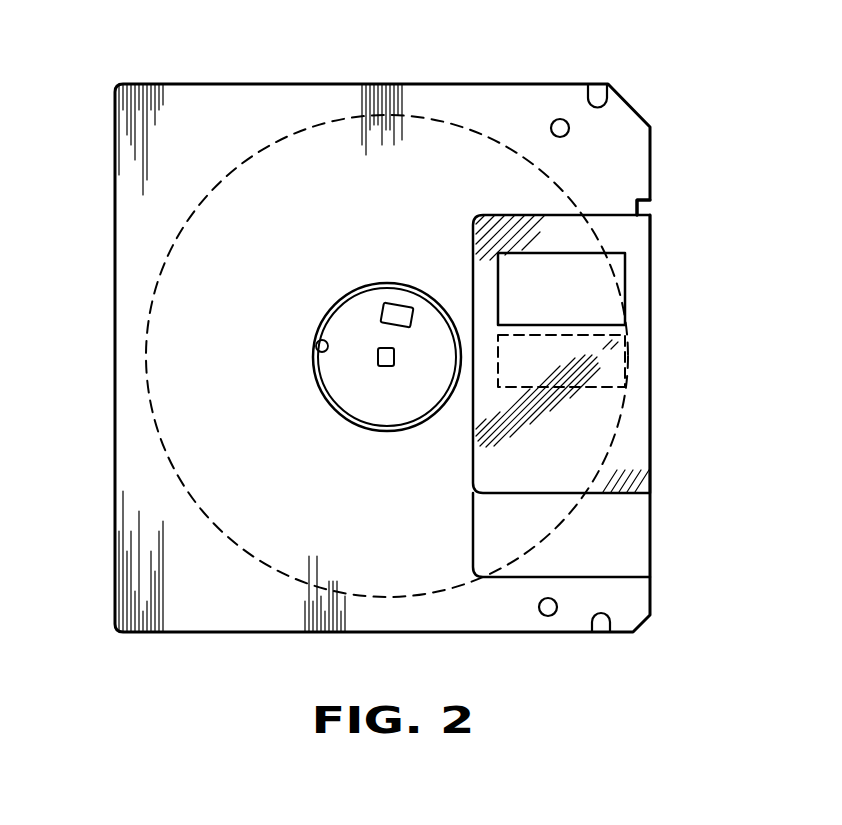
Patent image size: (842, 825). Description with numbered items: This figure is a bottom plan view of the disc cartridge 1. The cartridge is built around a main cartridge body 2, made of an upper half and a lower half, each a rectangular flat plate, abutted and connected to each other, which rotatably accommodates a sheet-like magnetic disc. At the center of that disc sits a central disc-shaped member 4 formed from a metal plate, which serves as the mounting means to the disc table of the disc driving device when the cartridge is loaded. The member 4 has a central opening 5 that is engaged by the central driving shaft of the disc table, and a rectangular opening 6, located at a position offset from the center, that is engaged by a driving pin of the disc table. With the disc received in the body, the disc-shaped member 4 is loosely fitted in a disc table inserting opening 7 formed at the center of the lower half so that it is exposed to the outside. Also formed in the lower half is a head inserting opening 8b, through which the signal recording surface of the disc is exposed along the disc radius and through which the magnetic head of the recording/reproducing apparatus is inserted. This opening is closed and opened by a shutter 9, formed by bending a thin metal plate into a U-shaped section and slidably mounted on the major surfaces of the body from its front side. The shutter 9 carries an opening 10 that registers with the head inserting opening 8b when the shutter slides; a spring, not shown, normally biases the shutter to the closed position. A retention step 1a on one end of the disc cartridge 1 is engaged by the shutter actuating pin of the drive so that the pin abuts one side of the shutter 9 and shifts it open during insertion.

The disc cartridge 1 is at (181, 84).
The retention step 1a is at (643, 204).
The main cartridge body 2 is at (522, 108).
The central disc-shaped member 4 is at (343, 318).
The central opening 5 is at (383, 366).
The rectangular opening 6 is at (397, 312).
The disc table inserting opening 7 is at (316, 355).
The head inserting opening 8b is at (583, 337).
The shutter 9 is at (652, 418).
The opening 10 is at (625, 268).